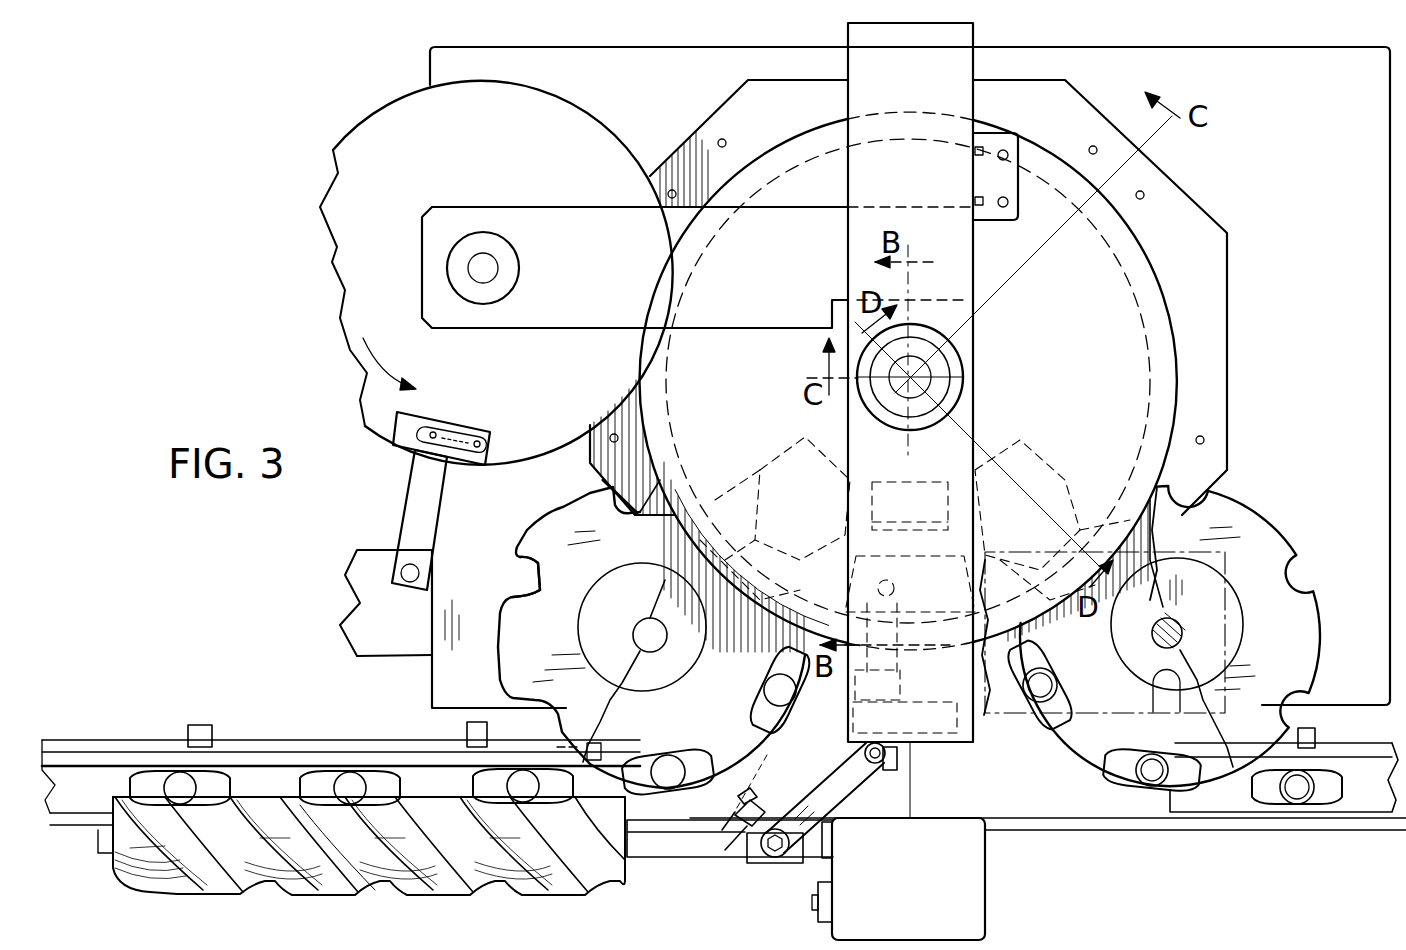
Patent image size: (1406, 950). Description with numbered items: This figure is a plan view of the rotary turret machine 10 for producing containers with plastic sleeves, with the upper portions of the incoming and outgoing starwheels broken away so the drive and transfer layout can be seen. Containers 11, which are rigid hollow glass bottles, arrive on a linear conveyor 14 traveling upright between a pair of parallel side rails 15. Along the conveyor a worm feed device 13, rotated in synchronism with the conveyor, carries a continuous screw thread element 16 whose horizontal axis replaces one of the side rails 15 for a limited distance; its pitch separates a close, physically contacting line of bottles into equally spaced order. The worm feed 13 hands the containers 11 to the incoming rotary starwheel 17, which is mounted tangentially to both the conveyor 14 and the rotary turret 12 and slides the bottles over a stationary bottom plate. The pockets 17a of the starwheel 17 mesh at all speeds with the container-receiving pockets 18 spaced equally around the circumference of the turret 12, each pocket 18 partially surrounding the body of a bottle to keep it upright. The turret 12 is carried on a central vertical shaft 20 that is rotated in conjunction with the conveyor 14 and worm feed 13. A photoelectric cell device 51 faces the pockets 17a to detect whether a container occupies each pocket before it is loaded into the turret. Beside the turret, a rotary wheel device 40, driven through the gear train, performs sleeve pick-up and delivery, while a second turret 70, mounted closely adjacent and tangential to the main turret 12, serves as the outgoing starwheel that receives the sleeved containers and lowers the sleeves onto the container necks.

The rotary turret machine 10 is at (1185, 183).
The containers 11 is at (333, 775).
The rotary turret 12 is at (1167, 298).
The worm feed device 13 is at (546, 902).
The linear conveyor 14 is at (128, 775).
The side rails 15 is at (76, 818).
The screw thread element 16 is at (345, 898).
The rotary starwheel 17 is at (552, 648).
The pockets 17a is at (533, 581).
The container-receiving pocket 18 is at (911, 717).
The central vertical shaft 20 is at (938, 378).
The rotary wheel device 40 is at (330, 179).
The photoelectric cell device 51 is at (740, 852).
The outgoing starwheel turret 70 is at (1270, 519).